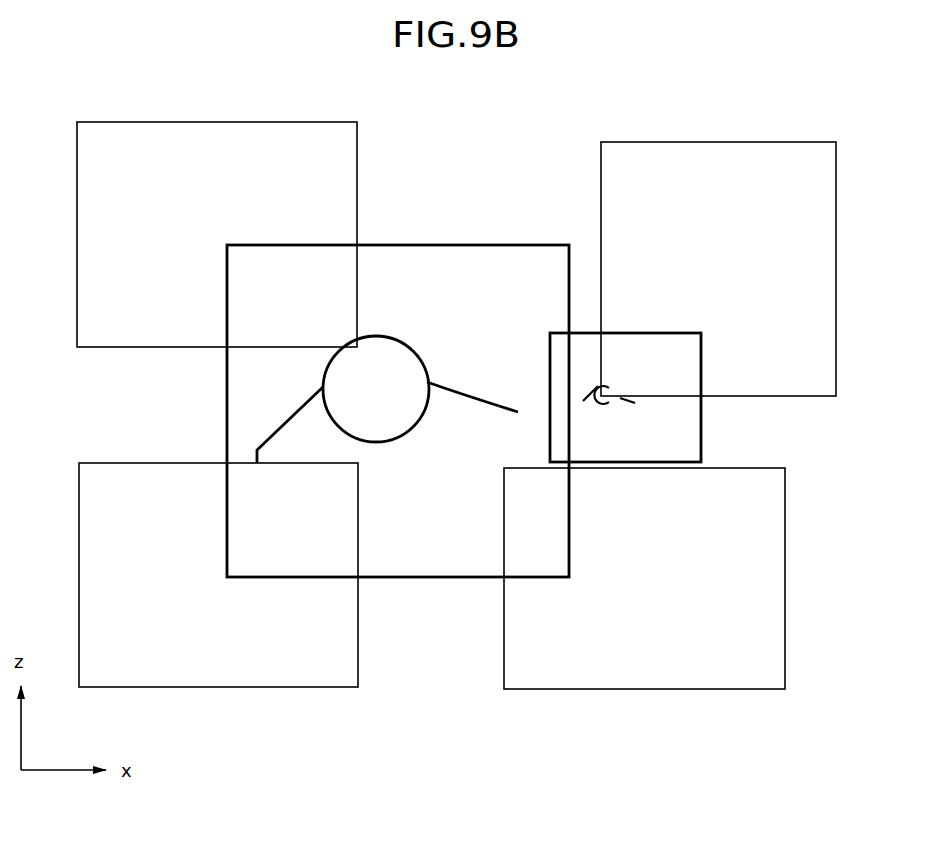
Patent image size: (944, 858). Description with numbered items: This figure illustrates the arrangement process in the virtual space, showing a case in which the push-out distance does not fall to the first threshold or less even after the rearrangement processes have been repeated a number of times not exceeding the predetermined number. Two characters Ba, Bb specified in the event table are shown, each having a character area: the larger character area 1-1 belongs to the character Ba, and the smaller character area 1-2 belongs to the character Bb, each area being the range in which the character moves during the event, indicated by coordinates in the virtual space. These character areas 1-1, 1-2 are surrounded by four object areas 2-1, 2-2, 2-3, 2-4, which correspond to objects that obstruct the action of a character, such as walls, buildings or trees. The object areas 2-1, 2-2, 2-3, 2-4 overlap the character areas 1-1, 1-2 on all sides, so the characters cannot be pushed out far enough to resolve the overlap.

The object area 2-3 is at (146, 119).
The object area 2-4 is at (754, 134).
The object area 2-1 is at (189, 691).
The object area 2-2 is at (722, 694).
The character area 1-1 is at (406, 242).
The character area 1-2 is at (704, 428).
The character Ba is at (374, 336).
The character Bb is at (602, 402).